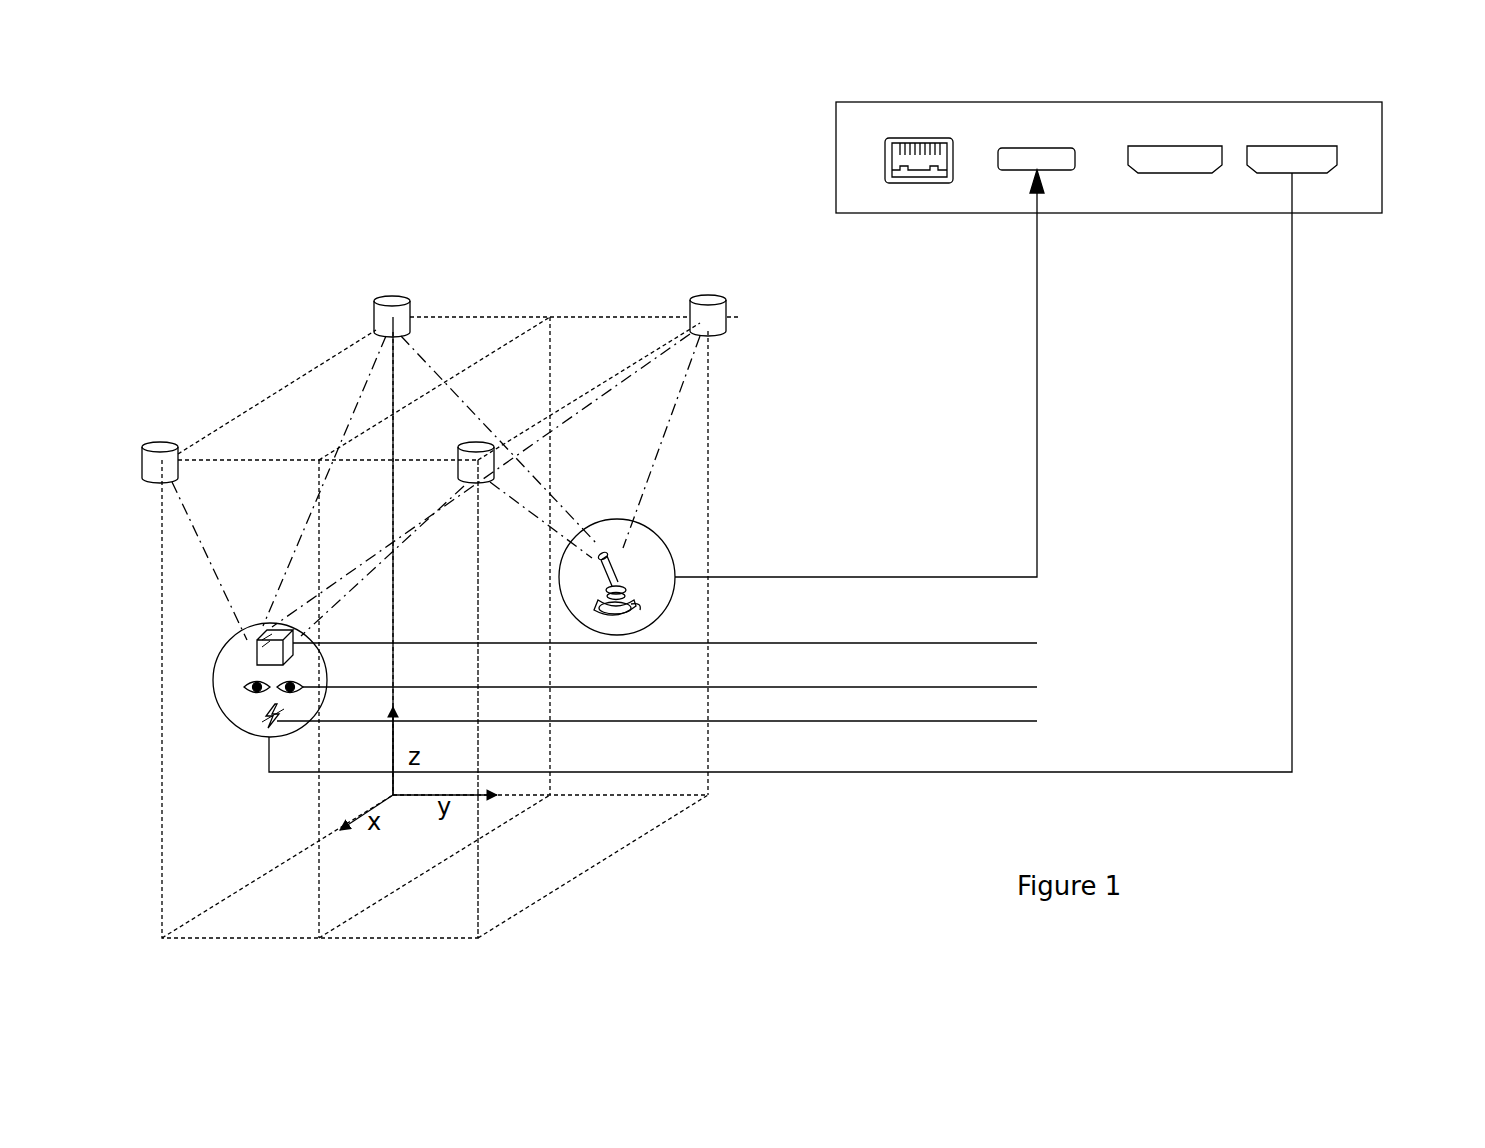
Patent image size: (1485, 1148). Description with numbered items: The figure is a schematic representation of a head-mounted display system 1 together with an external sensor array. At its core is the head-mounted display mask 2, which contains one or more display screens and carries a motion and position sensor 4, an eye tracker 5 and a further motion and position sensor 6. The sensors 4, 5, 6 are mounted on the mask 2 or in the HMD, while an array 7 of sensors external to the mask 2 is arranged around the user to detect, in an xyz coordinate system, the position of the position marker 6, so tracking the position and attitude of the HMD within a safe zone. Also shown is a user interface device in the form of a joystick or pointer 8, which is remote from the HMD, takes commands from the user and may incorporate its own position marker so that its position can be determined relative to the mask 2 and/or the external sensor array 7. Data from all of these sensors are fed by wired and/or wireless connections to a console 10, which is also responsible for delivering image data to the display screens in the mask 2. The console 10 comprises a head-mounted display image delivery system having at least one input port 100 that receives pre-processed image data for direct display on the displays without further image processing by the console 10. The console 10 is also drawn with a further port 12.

The head-mounted display system 1 is at (152, 675).
The head-mounted display mask 2 is at (224, 729).
The motion and position sensor 4 is at (847, 721).
The eye tracker 5 is at (871, 687).
The further motion and position sensor 6 is at (884, 643).
The array of sensors 7 is at (392, 297).
The pointer 8 is at (853, 576).
The console 10 is at (1382, 120).
The HDMI video output port 12 is at (1285, 145).
The input port 100 is at (905, 184).